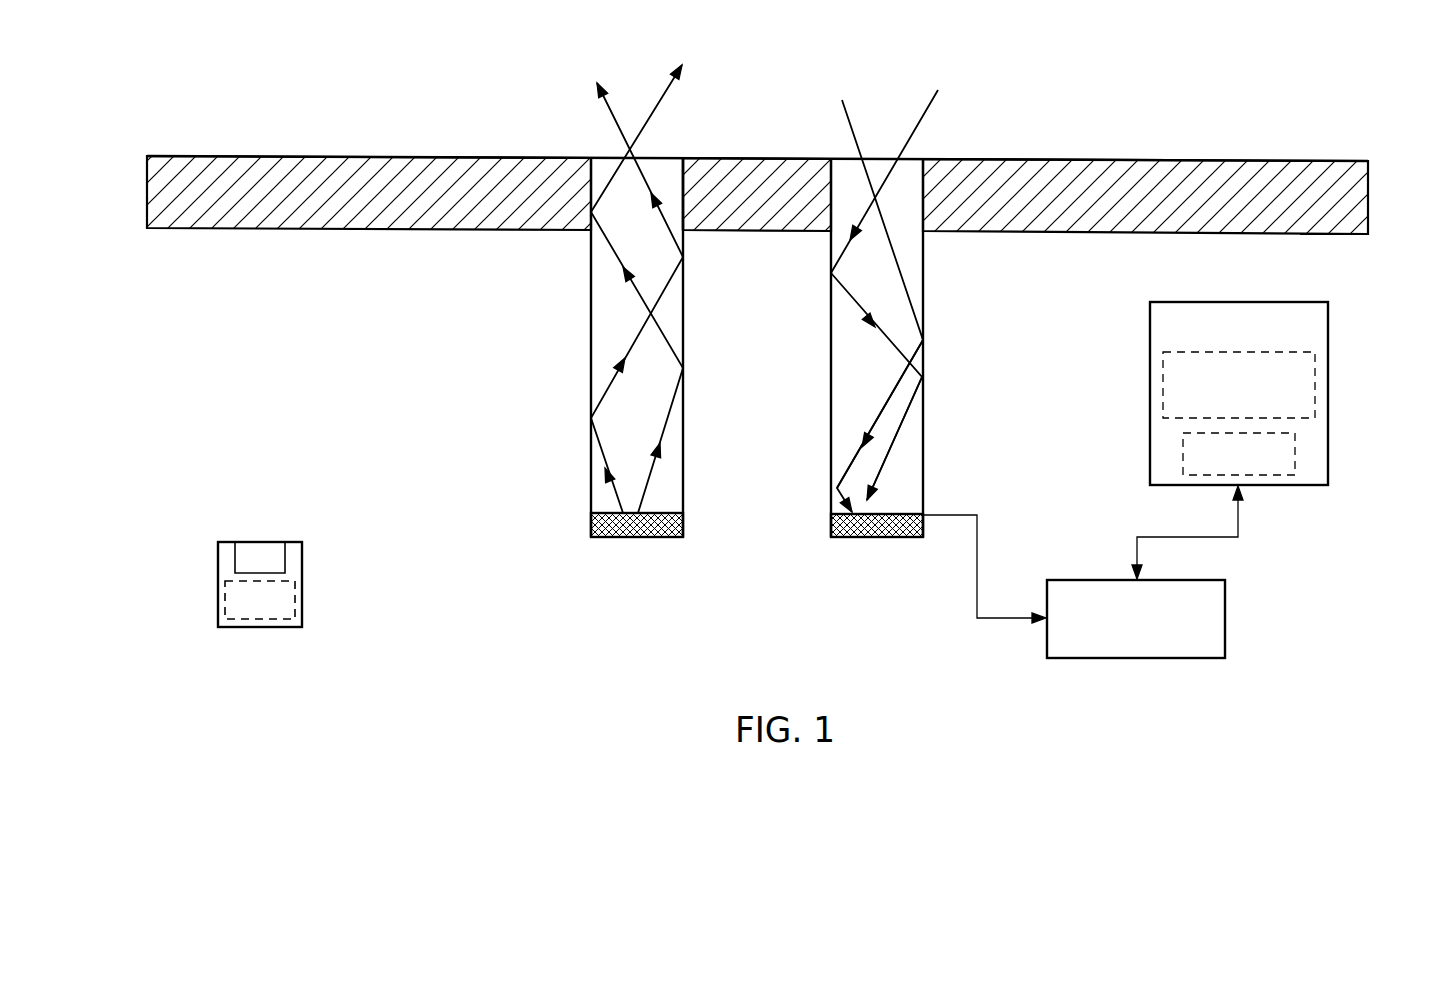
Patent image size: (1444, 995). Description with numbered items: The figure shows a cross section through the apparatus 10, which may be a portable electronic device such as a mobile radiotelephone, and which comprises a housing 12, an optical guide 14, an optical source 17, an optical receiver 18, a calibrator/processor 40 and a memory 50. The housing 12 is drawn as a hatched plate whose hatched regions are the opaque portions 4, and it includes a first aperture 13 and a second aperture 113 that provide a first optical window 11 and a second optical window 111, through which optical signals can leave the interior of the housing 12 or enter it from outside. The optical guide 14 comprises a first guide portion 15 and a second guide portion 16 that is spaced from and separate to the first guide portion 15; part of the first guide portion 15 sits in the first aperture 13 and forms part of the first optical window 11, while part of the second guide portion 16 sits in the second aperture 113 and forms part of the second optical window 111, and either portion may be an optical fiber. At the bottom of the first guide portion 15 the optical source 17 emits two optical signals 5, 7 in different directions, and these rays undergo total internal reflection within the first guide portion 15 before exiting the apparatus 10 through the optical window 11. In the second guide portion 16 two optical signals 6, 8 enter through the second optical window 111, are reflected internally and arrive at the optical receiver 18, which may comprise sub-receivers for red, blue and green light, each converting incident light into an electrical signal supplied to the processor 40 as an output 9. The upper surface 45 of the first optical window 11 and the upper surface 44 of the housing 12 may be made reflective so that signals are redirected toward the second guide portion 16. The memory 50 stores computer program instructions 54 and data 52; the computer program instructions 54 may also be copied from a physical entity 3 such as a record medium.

The physical entity 3 is at (218, 562).
The opaque portions of the housing 4 is at (330, 156).
The optical signal 5 is at (603, 393).
The optical signal 6 is at (852, 465).
The optical signal 7 is at (677, 408).
The optical signal 8 is at (893, 430).
The output 9 is at (977, 558).
The apparatus 10 is at (1221, 480).
The first optical window 11 is at (605, 149).
The housing 12 is at (1384, 218).
The first aperture 13 is at (690, 149).
The optical guide 14 is at (613, 314).
The first guide portion 15 is at (590, 292).
The second guide portion 16 is at (923, 307).
The optical source 17 is at (625, 538).
The optical receiver 18 is at (870, 538).
The calibrator/processor 40 is at (1225, 618).
The upper surface of the housing 44 is at (765, 157).
The upper surface of the first optical window 45 is at (665, 157).
The memory 50 is at (1150, 395).
The data 52 is at (1295, 455).
The computer program instructions 54 is at (1315, 385).
The second optical window 111 is at (841, 149).
The second aperture 113 is at (924, 141).